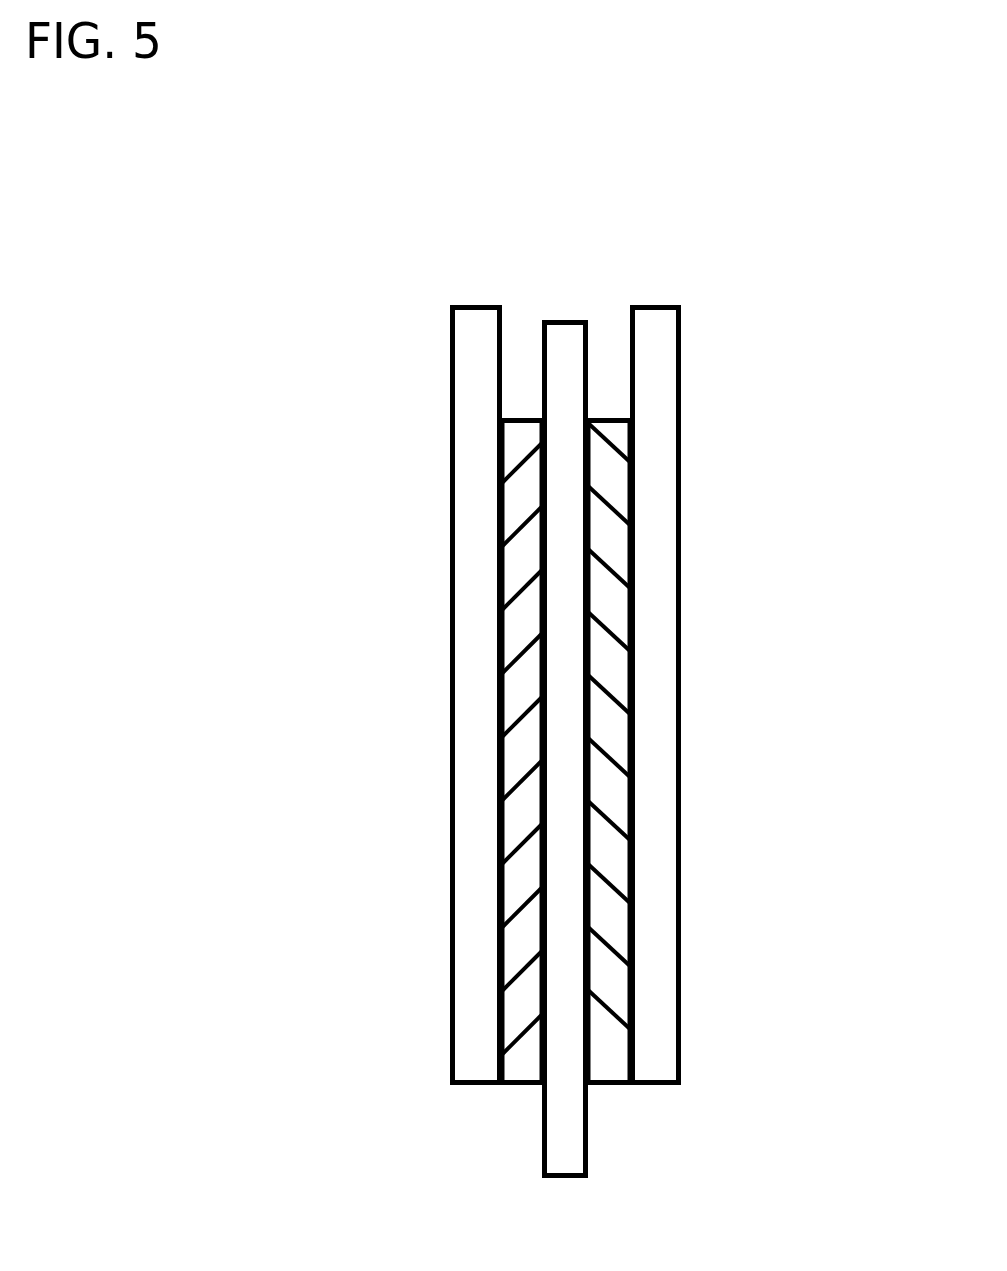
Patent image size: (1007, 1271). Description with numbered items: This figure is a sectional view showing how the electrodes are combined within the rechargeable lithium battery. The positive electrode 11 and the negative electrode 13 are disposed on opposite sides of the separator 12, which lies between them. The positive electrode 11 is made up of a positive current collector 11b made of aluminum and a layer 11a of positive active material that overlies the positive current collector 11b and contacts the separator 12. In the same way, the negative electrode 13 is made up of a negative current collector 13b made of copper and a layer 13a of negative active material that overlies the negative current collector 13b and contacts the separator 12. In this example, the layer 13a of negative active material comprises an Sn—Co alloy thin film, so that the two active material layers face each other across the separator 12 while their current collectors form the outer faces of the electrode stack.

The positive electrode 11 is at (420, 298).
The layer of positive active material 11a is at (522, 1060).
The positive current collector 11b is at (478, 808).
The separator 12 is at (562, 343).
The negative electrode 13 is at (727, 342).
The layer of negative active material 13a is at (602, 1057).
The negative current collector 13b is at (657, 813).